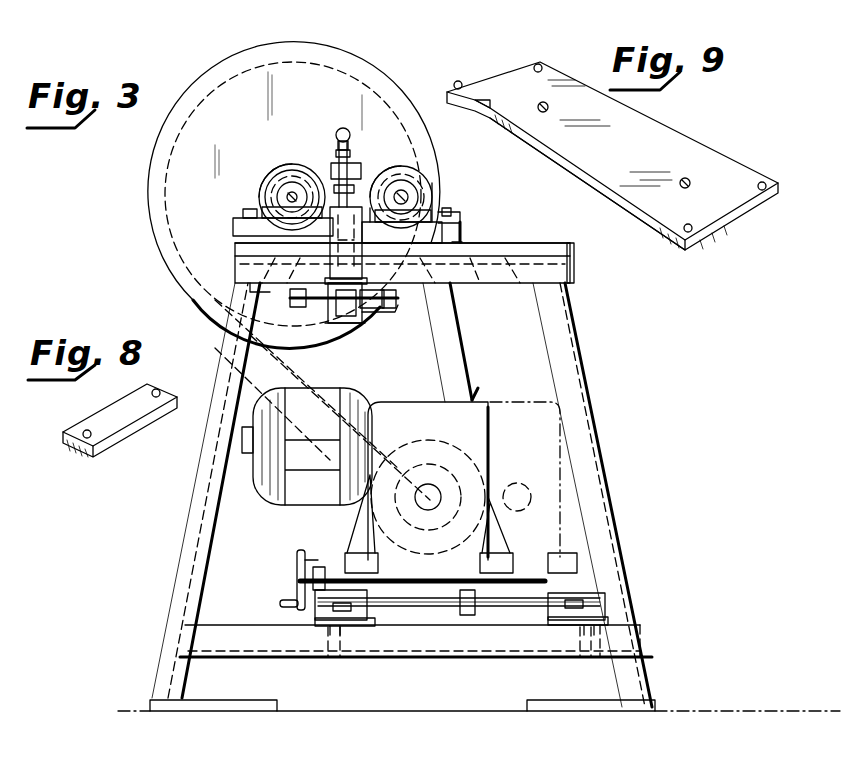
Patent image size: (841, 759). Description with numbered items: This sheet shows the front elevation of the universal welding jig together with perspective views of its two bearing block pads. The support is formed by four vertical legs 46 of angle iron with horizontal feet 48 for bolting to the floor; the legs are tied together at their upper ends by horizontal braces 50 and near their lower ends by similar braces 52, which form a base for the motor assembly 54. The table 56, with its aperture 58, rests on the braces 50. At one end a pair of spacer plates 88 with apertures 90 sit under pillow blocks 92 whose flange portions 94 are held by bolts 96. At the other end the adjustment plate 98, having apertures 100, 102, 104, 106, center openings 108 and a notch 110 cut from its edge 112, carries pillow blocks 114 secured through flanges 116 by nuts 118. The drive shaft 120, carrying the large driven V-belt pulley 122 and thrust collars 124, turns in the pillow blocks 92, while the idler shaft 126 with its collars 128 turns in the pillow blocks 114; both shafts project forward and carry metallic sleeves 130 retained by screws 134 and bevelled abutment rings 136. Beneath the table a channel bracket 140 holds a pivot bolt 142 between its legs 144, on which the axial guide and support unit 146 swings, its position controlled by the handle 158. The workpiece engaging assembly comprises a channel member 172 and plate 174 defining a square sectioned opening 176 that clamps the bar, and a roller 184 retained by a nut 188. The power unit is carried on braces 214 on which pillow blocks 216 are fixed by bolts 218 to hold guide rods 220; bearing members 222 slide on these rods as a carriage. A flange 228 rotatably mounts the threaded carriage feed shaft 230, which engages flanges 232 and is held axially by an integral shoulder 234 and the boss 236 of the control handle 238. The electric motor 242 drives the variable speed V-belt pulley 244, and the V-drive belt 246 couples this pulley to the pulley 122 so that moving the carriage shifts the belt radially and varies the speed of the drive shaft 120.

In FIG. 3, the vertical legs 46 is at (608, 425).
In FIG. 3, the feet 48 is at (222, 702).
In FIG. 3, the horizontally extending braces 50 is at (505, 268).
In FIG. 3, the horizontally extending braces 52 is at (400, 657).
In FIG. 3, the motor assembly 54 is at (490, 389).
In FIG. 3, the table 56 is at (572, 252).
In FIG. 3, the aperture 58 is at (62, 751).
In FIG. 3, the spacer plates 88 is at (240, 232).
In FIG. 8, the spacer plates 88 is at (122, 417).
In FIG. 8, the apertures 90 is at (157, 388).
In FIG. 3, the pillow blocks 92 is at (280, 170).
In FIG. 3, the flange portions 94 is at (248, 215).
In FIG. 3, the bolts 96 is at (250, 210).
In FIG. 3, the adjustment plate 98 is at (468, 245).
In FIG. 9, the adjustment plate 98 is at (697, 155).
In FIG. 9, the aperture 100 is at (458, 82).
In FIG. 9, the aperture 102 is at (536, 65).
In FIG. 9, the aperture 104 is at (690, 235).
In FIG. 9, the aperture 106 is at (763, 192).
In FIG. 9, the openings 108 is at (550, 104).
In FIG. 9, the notch 110 is at (487, 112).
In FIG. 9, the edge 112 is at (610, 200).
In FIG. 3, the pillow blocks 114 is at (433, 188).
In FIG. 3, the flanges 116 is at (465, 225).
In FIG. 3, the nuts 118 is at (450, 212).
In FIG. 3, the drive shaft 120 is at (262, 183).
In FIG. 3, the driven V-belt pulley 122 is at (148, 200).
In FIG. 3, the collars 124 is at (270, 178).
In FIG. 3, the idler shaft 126 is at (350, 165).
In FIG. 3, the collars 128 is at (420, 180).
In FIG. 3, the metallic sleeves 130 is at (275, 172).
In FIG. 3, the screws 134 is at (288, 202).
In FIG. 3, the abutment rings 136 is at (290, 158).
In FIG. 3, the channel bracket 140 is at (255, 293).
In FIG. 3, the pivot bolt 142 is at (380, 312).
In FIG. 3, the legs 144 is at (296, 310).
In FIG. 3, the axial guide and support unit 146 is at (348, 330).
In FIG. 3, the handle 158 is at (343, 127).
In FIG. 3, the channel member 172 is at (338, 320).
In FIG. 3, the plate 174 is at (375, 318).
In FIG. 3, the square sectioned opening 176 is at (322, 302).
In FIG. 3, the roller 184 is at (356, 185).
In FIG. 3, the nut 188 is at (328, 168).
In FIG. 3, the braces 214 is at (315, 657).
In FIG. 3, the pillow blocks 216 is at (342, 628).
In FIG. 3, the bolts 218 is at (325, 605).
In FIG. 3, the guide rods 220 is at (500, 606).
In FIG. 3, the bearing members 222 is at (458, 606).
In FIG. 3, the flange 228 is at (303, 558).
In FIG. 3, the carriage feed shaft 230 is at (433, 575).
In FIG. 3, the flanges 232 is at (380, 580).
In FIG. 3, the integral shoulder 234 is at (320, 568).
In FIG. 3, the boss 236 is at (296, 600).
In FIG. 3, the control handle 238 is at (298, 578).
In FIG. 3, the electric motor 242 is at (340, 390).
In FIG. 3, the variable speed V-belt pulley 244 is at (420, 440).
In FIG. 3, the V-drive belt 246 is at (222, 332).